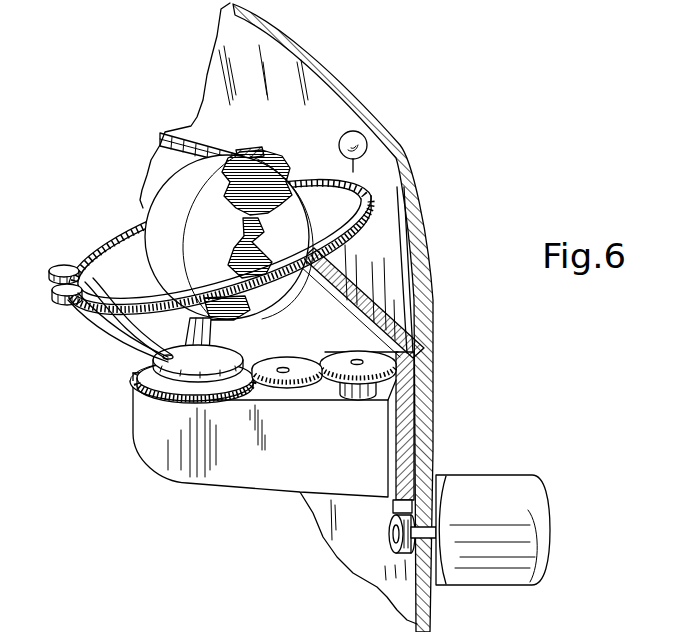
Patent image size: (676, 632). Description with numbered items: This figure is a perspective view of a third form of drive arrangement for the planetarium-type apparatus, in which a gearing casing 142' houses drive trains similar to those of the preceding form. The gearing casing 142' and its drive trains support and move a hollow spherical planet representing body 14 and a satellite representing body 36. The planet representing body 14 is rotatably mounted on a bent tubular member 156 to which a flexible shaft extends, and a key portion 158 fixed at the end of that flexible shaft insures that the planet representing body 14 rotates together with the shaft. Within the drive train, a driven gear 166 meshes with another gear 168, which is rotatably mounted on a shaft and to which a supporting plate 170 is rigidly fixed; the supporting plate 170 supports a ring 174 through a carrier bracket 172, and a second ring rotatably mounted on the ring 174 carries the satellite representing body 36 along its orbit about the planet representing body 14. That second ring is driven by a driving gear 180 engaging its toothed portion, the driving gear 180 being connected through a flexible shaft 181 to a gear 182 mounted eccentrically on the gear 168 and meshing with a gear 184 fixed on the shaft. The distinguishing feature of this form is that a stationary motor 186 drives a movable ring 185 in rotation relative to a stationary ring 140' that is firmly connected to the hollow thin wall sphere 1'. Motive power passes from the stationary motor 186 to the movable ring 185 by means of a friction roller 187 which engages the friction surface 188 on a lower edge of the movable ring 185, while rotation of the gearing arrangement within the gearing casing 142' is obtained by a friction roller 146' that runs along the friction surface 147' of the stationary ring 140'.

The hollow thin wall sphere 1' is at (287, 317).
The planet representing body 14 is at (177, 193).
The satellite representing body 36 is at (353, 131).
The stationary ring 140' is at (434, 426).
The gearing casing 142' is at (260, 445).
The friction roller 146' is at (349, 359).
The friction surface 147' is at (382, 303).
The bent tubular member 156 is at (197, 331).
The key portion 158 is at (253, 150).
The driven gear 166 is at (277, 363).
The gear 168 is at (187, 402).
The supporting plate 170 is at (148, 372).
The carrier bracket 172 is at (118, 344).
The ring 174 is at (363, 223).
The driving gear 180 is at (67, 267).
The flexible shaft 181 is at (82, 314).
The gear 182 is at (147, 386).
The gear 184 is at (160, 401).
The movable ring 185 is at (386, 500).
The stationary motor 186 is at (536, 507).
The friction roller 187 is at (399, 551).
The friction surface 188 is at (393, 518).